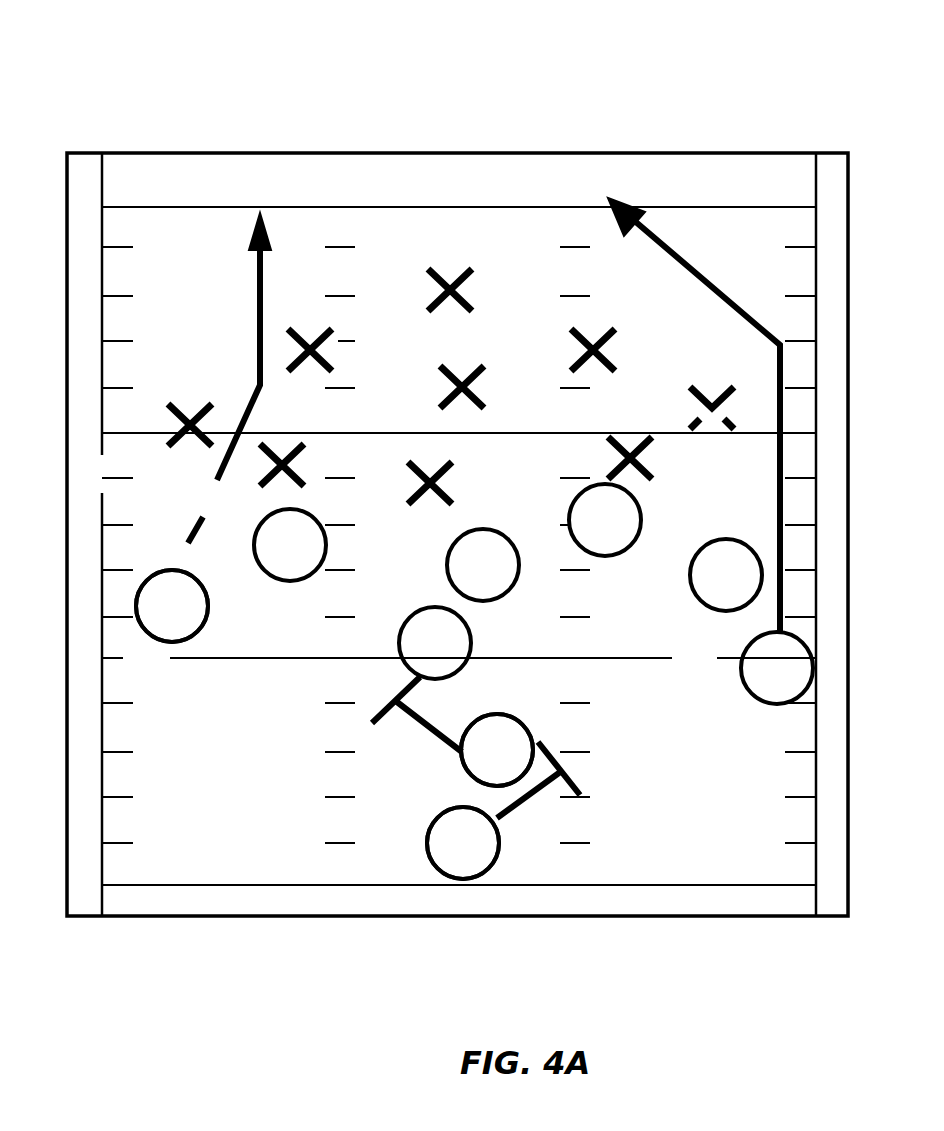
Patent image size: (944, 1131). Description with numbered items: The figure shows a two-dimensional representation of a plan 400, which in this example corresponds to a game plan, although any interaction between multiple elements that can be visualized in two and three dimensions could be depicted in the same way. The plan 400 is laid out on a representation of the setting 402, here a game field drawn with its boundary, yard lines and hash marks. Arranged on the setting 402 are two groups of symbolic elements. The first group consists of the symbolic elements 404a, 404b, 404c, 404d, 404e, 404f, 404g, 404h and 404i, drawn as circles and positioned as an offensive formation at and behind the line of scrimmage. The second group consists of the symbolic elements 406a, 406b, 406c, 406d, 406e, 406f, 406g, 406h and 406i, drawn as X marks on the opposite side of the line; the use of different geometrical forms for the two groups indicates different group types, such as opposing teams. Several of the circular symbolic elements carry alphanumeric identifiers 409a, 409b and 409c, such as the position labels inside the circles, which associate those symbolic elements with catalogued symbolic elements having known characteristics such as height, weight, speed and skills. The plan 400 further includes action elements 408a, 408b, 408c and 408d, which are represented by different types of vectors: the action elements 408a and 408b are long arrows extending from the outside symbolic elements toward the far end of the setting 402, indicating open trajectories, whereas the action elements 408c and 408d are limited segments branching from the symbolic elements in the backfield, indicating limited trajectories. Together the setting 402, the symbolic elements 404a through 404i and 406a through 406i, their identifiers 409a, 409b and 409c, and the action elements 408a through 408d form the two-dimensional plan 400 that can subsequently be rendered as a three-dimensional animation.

The plan 400 is at (99, 62).
The setting 402 is at (347, 196).
The symbolic element 404a is at (186, 640).
The symbolic element 404b is at (300, 580).
The symbolic element 404c is at (457, 753).
The symbolic element 404d is at (452, 553).
The symbolic element 404e is at (462, 674).
The symbolic element 404f is at (430, 827).
The symbolic element 404g is at (597, 554).
The symbolic element 404h is at (740, 611).
The symbolic element 404i is at (750, 698).
The symbolic element 406a is at (430, 308).
The symbolic element 406b is at (170, 435).
The symbolic element 406c is at (333, 362).
The symbolic element 406d is at (480, 370).
The symbolic element 406e is at (612, 333).
The symbolic element 406f is at (738, 425).
The symbolic element 406g is at (265, 460).
The symbolic element 406h is at (448, 470).
The symbolic element 406i is at (660, 437).
The action element 408a is at (260, 283).
The action element 408b is at (680, 262).
The action element 408c is at (372, 722).
The action element 408d is at (582, 794).
The alphanumeric identifier 409a is at (137, 604).
The alphanumeric identifier 409b is at (505, 753).
The alphanumeric identifier 409c is at (480, 845).